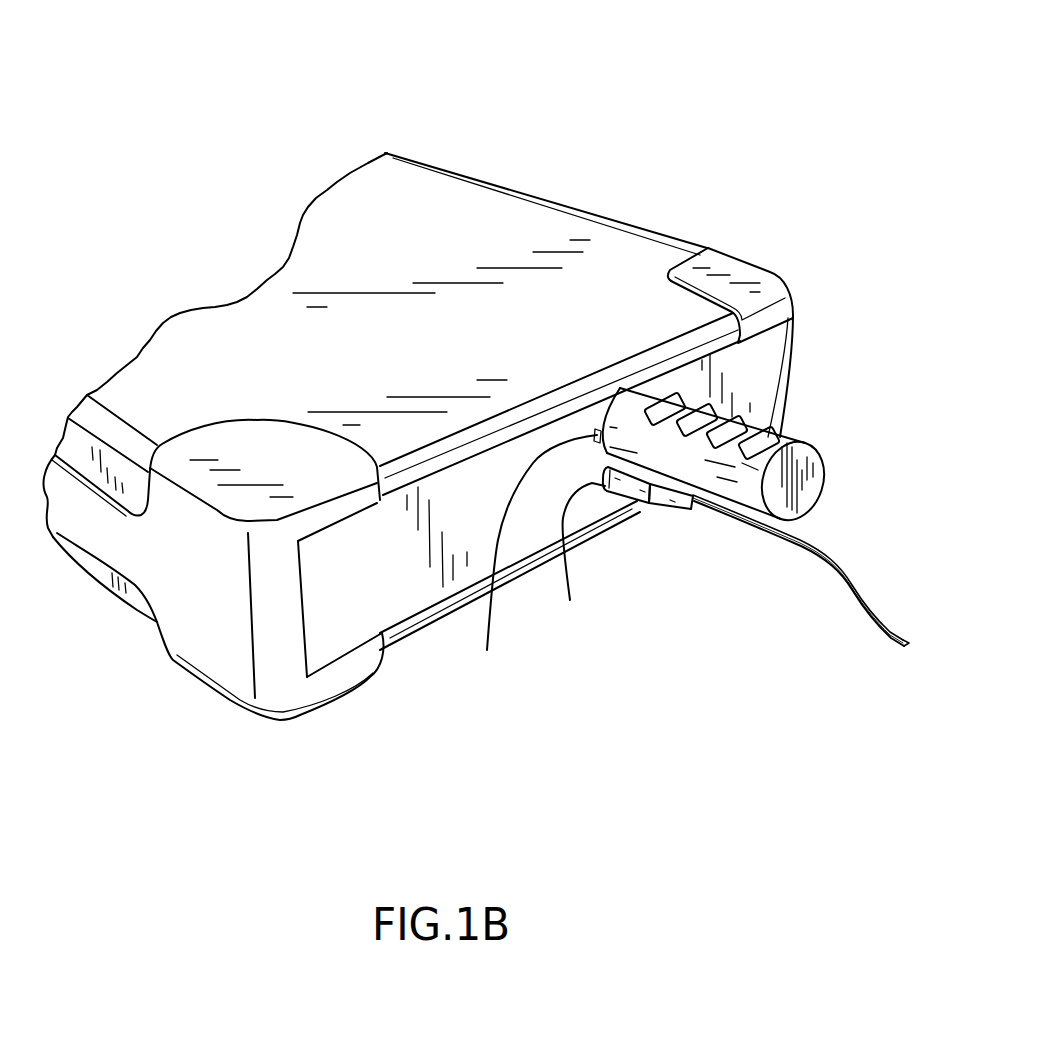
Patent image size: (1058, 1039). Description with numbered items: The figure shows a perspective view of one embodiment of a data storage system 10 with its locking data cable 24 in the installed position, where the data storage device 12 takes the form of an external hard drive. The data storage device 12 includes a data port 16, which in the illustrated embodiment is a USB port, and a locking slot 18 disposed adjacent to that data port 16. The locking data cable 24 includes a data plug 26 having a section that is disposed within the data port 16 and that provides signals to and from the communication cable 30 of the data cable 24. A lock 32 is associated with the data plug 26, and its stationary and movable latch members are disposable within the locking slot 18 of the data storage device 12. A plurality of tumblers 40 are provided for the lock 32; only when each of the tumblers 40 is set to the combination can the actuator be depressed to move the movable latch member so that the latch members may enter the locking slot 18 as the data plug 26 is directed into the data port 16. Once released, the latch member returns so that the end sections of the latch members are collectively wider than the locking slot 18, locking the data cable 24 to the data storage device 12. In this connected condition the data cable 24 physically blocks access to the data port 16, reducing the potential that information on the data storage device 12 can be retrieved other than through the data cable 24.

The data storage system 10 is at (482, 360).
The data storage device 12 is at (431, 164).
The data port 16 is at (581, 571).
The locking slot 18 is at (529, 575).
The locking data cable 24 is at (792, 574).
The data plug 26 is at (633, 505).
The communication cable 30 is at (837, 553).
The lock 32 is at (817, 445).
The tumblers 40 is at (754, 475).